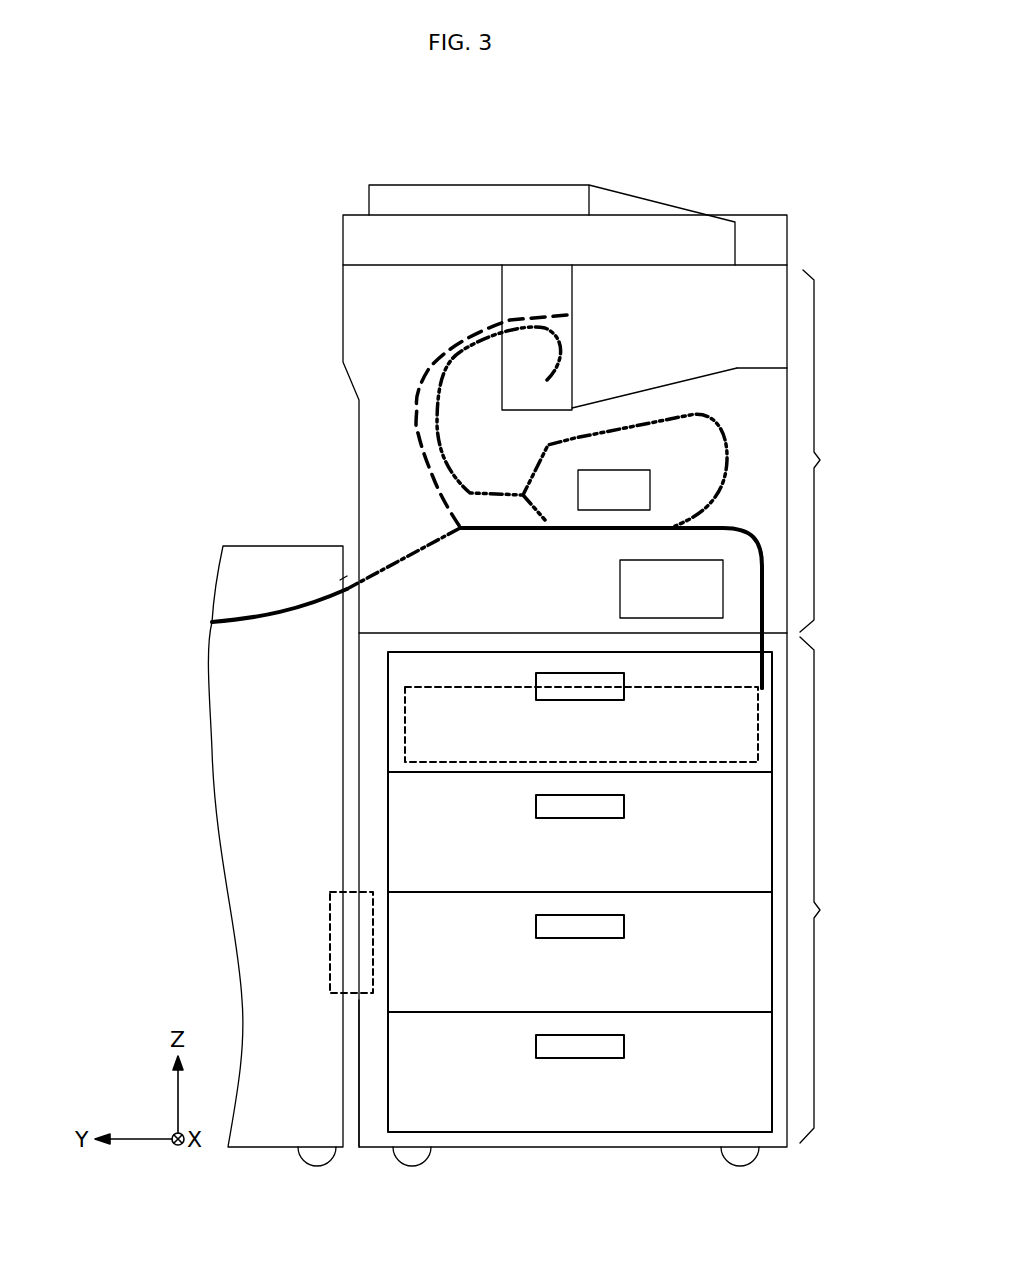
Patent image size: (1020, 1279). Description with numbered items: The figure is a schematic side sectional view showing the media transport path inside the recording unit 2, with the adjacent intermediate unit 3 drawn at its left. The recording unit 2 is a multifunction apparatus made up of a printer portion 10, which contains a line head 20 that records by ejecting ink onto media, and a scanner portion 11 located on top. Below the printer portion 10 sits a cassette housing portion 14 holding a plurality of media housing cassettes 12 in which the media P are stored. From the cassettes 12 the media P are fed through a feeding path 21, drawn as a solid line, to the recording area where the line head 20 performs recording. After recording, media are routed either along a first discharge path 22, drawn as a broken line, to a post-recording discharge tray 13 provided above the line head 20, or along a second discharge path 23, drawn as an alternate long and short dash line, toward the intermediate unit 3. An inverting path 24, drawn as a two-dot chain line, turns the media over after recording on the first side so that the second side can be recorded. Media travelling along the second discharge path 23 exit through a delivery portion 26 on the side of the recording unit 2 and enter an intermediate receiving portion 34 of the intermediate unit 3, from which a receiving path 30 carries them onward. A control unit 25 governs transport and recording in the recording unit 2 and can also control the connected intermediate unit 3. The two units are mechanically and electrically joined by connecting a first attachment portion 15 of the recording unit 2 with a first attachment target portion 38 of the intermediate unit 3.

The recording unit 2 is at (313, 207).
The intermediate unit 3 is at (232, 538).
The printer portion 10 is at (828, 451).
The scanner portion 11 is at (580, 185).
The media housing cassettes 12 is at (490, 768).
The post-recording discharge tray 13 is at (668, 383).
The cassette housing portion 14 is at (622, 890).
The first attachment portion 15 is at (375, 993).
The line head 20 is at (615, 470).
The feeding path 21 is at (765, 585).
The first discharge path 22 is at (487, 322).
The second discharge path 23 is at (420, 553).
The inverting path 24 is at (713, 423).
The control unit 25 is at (620, 568).
The delivery portion 26 is at (365, 570).
The receiving path 30 is at (310, 605).
The intermediate receiving portion 34 is at (342, 580).
The first attachment target portion 38 is at (327, 993).
The media P is at (710, 765).